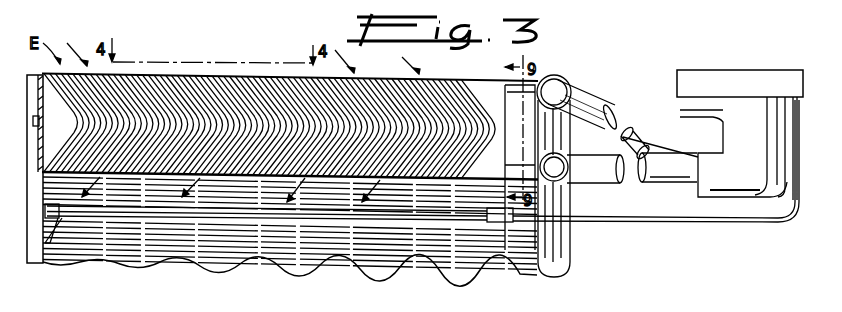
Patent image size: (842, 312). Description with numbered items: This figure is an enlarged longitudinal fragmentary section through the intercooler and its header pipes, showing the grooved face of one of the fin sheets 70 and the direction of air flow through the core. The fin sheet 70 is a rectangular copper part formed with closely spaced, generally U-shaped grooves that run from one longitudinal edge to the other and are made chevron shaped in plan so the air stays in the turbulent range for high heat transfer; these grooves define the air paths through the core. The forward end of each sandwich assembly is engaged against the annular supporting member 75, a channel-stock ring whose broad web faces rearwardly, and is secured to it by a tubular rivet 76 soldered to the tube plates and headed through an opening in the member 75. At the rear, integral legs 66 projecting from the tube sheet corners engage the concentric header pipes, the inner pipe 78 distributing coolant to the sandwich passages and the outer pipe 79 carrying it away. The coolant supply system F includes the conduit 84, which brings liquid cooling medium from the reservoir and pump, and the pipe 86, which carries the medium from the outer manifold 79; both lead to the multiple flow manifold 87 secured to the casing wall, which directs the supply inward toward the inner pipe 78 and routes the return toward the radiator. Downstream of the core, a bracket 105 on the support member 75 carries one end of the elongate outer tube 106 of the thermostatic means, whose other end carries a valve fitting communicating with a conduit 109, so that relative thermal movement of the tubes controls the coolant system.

The fin sheet 70 is at (441, 82).
The annular supporting member 75 is at (33, 88).
The tubular rivet 76 is at (37, 122).
The leg 66 is at (505, 85).
The inner header pipe 78 is at (553, 210).
The outer header pipe 79 is at (558, 88).
The pipe 86 is at (602, 96).
The multiple flow manifold 87 is at (703, 124).
The conduit 84 is at (672, 183).
The bracket 105 is at (50, 232).
The outer tube 106 is at (408, 215).
The conduit 109 is at (708, 223).
The cooling medium supply system F is at (749, 204).